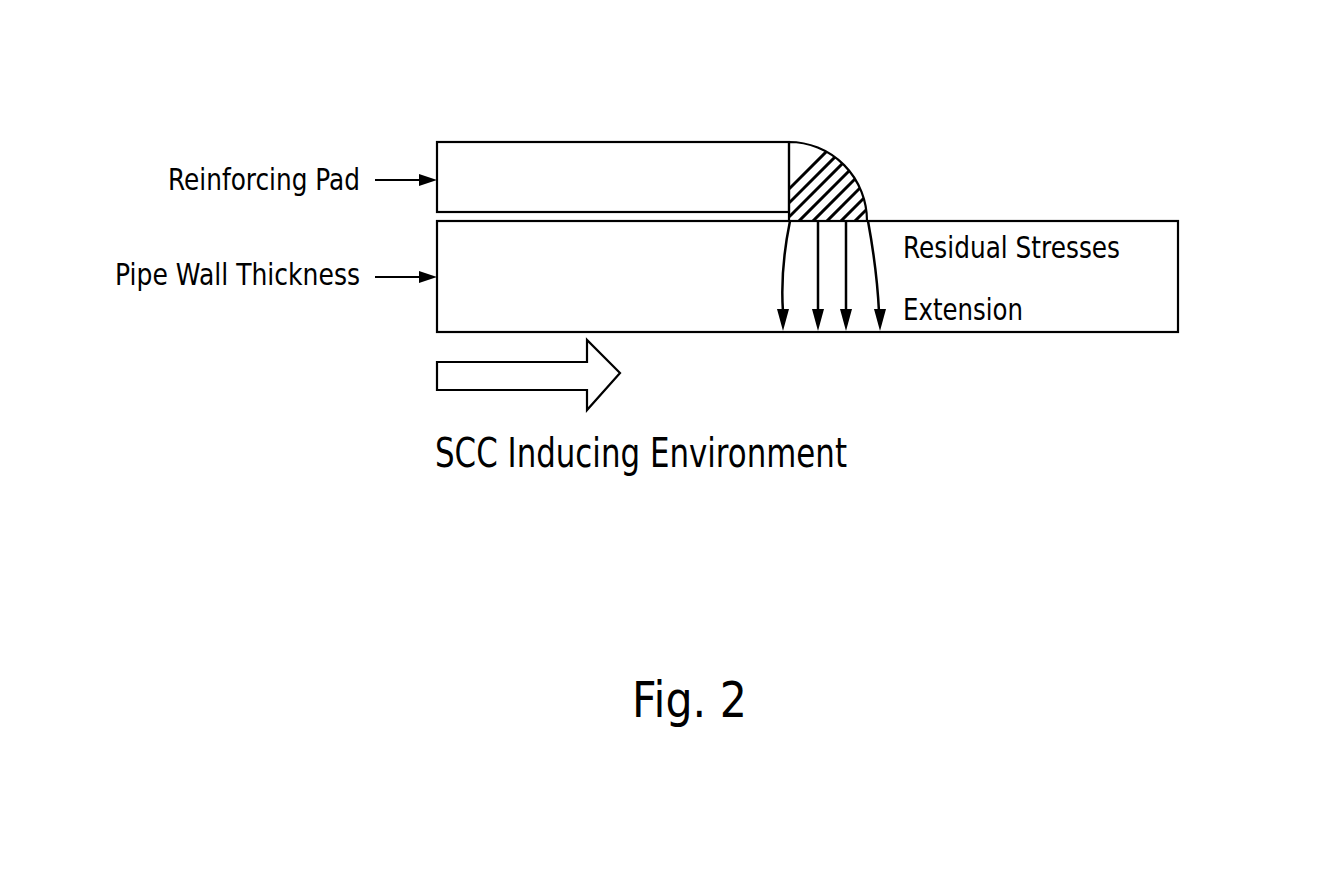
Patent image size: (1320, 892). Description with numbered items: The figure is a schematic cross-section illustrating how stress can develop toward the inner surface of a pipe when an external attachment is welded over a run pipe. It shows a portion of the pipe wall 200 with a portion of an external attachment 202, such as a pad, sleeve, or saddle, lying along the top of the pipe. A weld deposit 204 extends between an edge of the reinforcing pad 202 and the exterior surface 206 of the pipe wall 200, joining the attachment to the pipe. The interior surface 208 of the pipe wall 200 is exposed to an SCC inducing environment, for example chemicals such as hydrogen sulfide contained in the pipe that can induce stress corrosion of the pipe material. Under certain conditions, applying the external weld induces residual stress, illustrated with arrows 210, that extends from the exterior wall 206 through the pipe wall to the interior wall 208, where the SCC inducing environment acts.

The pipe wall 200 is at (1178, 262).
The external attachment 202 is at (597, 142).
The weld deposit 204 is at (842, 167).
The exterior surface 206 is at (1097, 220).
The interior surface 208 is at (1085, 332).
The residual stress arrows 210 is at (872, 240).